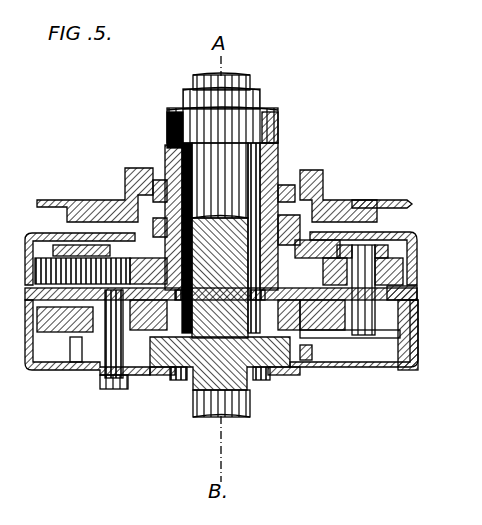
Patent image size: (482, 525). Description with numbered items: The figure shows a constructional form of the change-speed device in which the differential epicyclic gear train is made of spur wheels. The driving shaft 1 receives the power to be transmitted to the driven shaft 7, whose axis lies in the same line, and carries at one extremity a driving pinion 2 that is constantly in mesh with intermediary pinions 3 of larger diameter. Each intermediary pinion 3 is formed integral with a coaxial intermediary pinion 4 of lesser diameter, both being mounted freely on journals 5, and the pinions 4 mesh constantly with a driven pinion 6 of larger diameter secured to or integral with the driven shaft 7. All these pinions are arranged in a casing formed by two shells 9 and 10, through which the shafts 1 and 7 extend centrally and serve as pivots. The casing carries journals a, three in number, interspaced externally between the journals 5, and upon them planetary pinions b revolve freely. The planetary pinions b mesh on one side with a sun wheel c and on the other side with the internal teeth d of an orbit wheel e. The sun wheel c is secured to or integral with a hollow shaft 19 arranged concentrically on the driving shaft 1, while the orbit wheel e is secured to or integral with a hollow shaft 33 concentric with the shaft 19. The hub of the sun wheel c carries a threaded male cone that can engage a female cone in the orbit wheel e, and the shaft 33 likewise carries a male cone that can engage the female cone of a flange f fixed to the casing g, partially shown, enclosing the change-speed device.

The driving shaft 1 is at (170, 152).
The driving pinion 2 is at (270, 382).
The intermediary pinion 3 is at (50, 322).
The intermediary pinion 4 is at (75, 351).
The journal 5 is at (115, 380).
The driven pinion 6 is at (296, 377).
The driven shaft 7 is at (195, 400).
The shell 9 is at (418, 318).
The shell 10 is at (418, 363).
The hollow shaft 19 is at (262, 104).
The hollow shaft 33 is at (262, 135).
The journal a is at (362, 300).
The planetary pinion b is at (400, 293).
The sun wheel c is at (312, 238).
The internal teeth d is at (65, 245).
The orbit wheel e is at (418, 258).
The flange f is at (318, 175).
The casing g is at (390, 200).